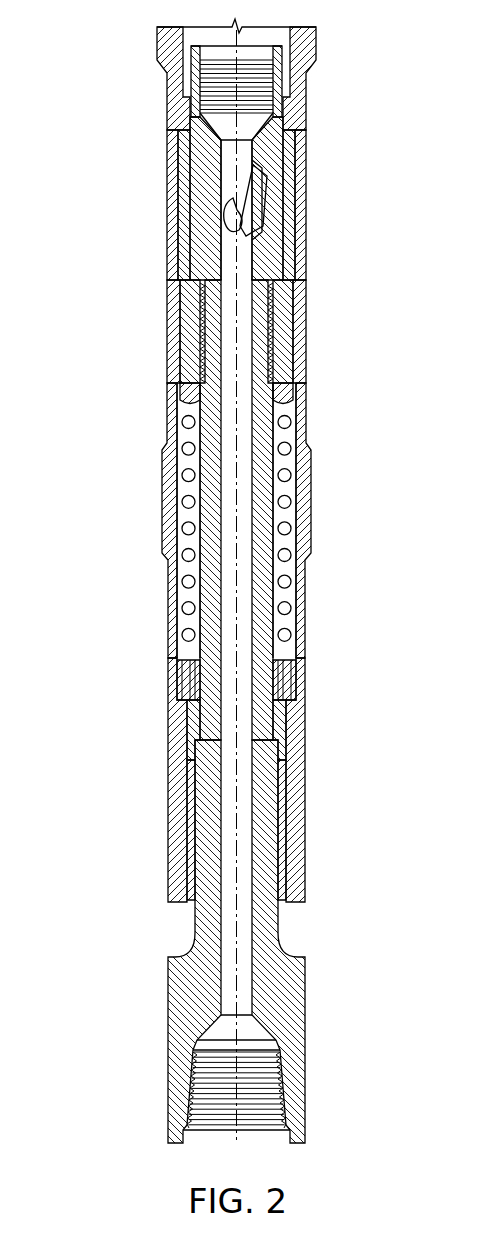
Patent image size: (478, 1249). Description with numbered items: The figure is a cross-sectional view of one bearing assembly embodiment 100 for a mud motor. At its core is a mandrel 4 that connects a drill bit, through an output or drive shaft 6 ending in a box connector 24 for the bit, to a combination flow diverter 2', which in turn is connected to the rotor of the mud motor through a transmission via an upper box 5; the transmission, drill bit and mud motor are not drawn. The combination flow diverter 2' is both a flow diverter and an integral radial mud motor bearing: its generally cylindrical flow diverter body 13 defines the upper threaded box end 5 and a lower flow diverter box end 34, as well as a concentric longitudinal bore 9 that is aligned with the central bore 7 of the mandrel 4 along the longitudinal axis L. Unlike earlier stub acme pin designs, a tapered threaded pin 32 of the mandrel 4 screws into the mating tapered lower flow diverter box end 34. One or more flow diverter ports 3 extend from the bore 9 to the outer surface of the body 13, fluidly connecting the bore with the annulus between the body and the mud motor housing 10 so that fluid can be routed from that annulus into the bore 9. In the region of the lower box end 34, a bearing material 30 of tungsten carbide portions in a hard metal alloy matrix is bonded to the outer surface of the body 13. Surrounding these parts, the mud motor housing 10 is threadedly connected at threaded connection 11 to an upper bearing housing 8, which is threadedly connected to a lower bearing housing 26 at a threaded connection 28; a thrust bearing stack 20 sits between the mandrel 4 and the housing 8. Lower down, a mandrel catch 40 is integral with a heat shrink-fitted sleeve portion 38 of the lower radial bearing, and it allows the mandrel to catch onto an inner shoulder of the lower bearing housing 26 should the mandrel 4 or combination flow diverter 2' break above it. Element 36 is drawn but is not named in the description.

The bearing assembly embodiment 100 is at (84, 100).
The mud motor housing 10 is at (158, 38).
The upper box 5 is at (212, 85).
The combination flow diverter 2' is at (272, 198).
The central bore 9 is at (232, 177).
The flow diverter body 13 is at (206, 207).
The flow diverter ports 3 is at (298, 228).
The threaded connection 11 is at (303, 187).
The bearing material 30 is at (287, 310).
The tapered threaded pin 32 is at (213, 333).
The lower flow diverter box end 34 is at (277, 350).
The seal 36 is at (177, 373).
The central bore 7 is at (226, 407).
The upper bearing housing 8 is at (302, 493).
The mandrel 4 is at (285, 598).
The thrust bearing stack 20 is at (190, 540).
The longitudinal axis L is at (233, 626).
The mandrel catch 40 is at (300, 664).
The threaded connection 28 is at (180, 713).
The heat shrink-fitted sleeve portion 38 is at (170, 823).
The lower bearing housing 26 is at (305, 870).
The drive shaft 6 is at (196, 985).
The box connector 24 is at (300, 1102).